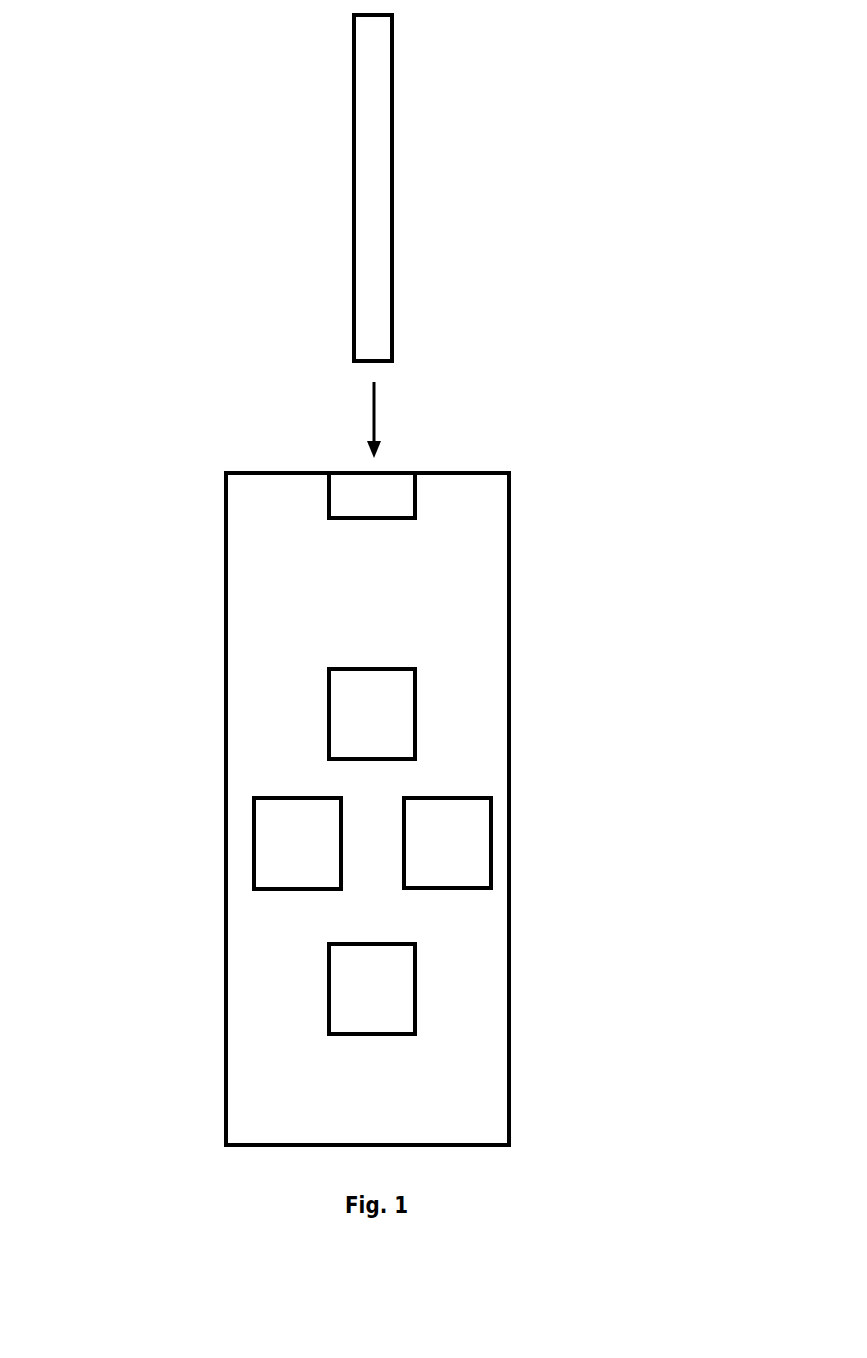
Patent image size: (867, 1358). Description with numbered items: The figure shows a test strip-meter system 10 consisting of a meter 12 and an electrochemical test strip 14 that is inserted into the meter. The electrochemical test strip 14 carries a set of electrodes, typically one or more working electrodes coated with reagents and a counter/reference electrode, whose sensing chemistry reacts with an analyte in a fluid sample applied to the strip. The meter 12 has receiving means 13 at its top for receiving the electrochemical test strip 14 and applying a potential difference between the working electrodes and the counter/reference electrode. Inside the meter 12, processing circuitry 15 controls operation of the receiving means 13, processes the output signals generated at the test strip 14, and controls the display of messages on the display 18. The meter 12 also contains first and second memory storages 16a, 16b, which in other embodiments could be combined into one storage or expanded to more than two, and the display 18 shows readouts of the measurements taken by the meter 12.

The test strip-meter system 10 is at (638, 373).
The meter 12 is at (511, 727).
The receiving means 13 is at (375, 485).
The electrochemical test strip 14 is at (394, 200).
The processing circuitry 15 is at (353, 709).
The first memory storage 16a is at (274, 833).
The second memory storage 16b is at (456, 853).
The display 18 is at (383, 999).